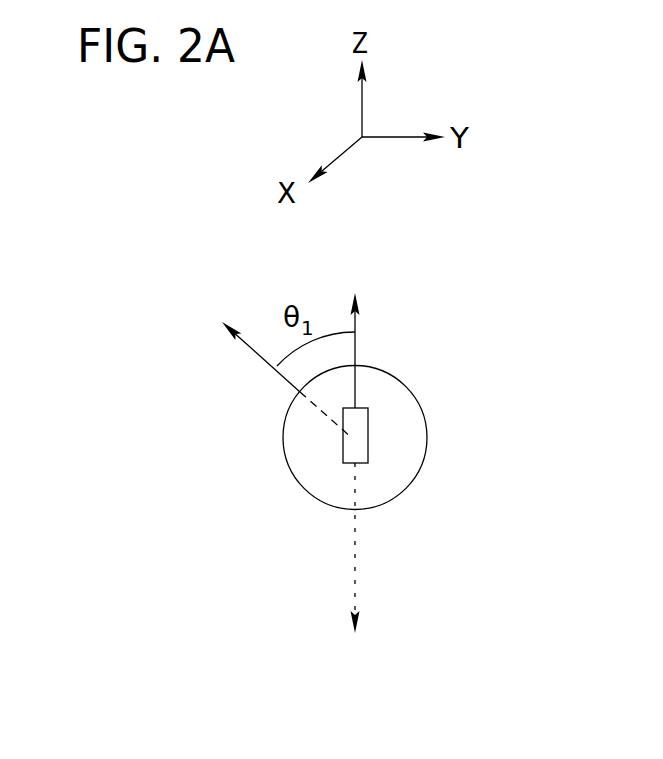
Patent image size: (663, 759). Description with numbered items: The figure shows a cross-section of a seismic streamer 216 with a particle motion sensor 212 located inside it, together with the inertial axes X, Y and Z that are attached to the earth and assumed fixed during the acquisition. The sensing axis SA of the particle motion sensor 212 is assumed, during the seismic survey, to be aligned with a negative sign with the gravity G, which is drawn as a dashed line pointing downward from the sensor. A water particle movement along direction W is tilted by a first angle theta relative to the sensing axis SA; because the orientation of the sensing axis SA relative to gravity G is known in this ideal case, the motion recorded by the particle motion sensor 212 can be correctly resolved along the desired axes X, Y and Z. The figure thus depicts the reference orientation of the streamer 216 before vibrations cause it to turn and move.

The streamer 216 is at (414, 393).
The particle motion sensor 212 is at (368, 438).
The sensing axis SA is at (356, 348).
The direction of water particle movement W is at (253, 352).
The gravity G is at (358, 571).